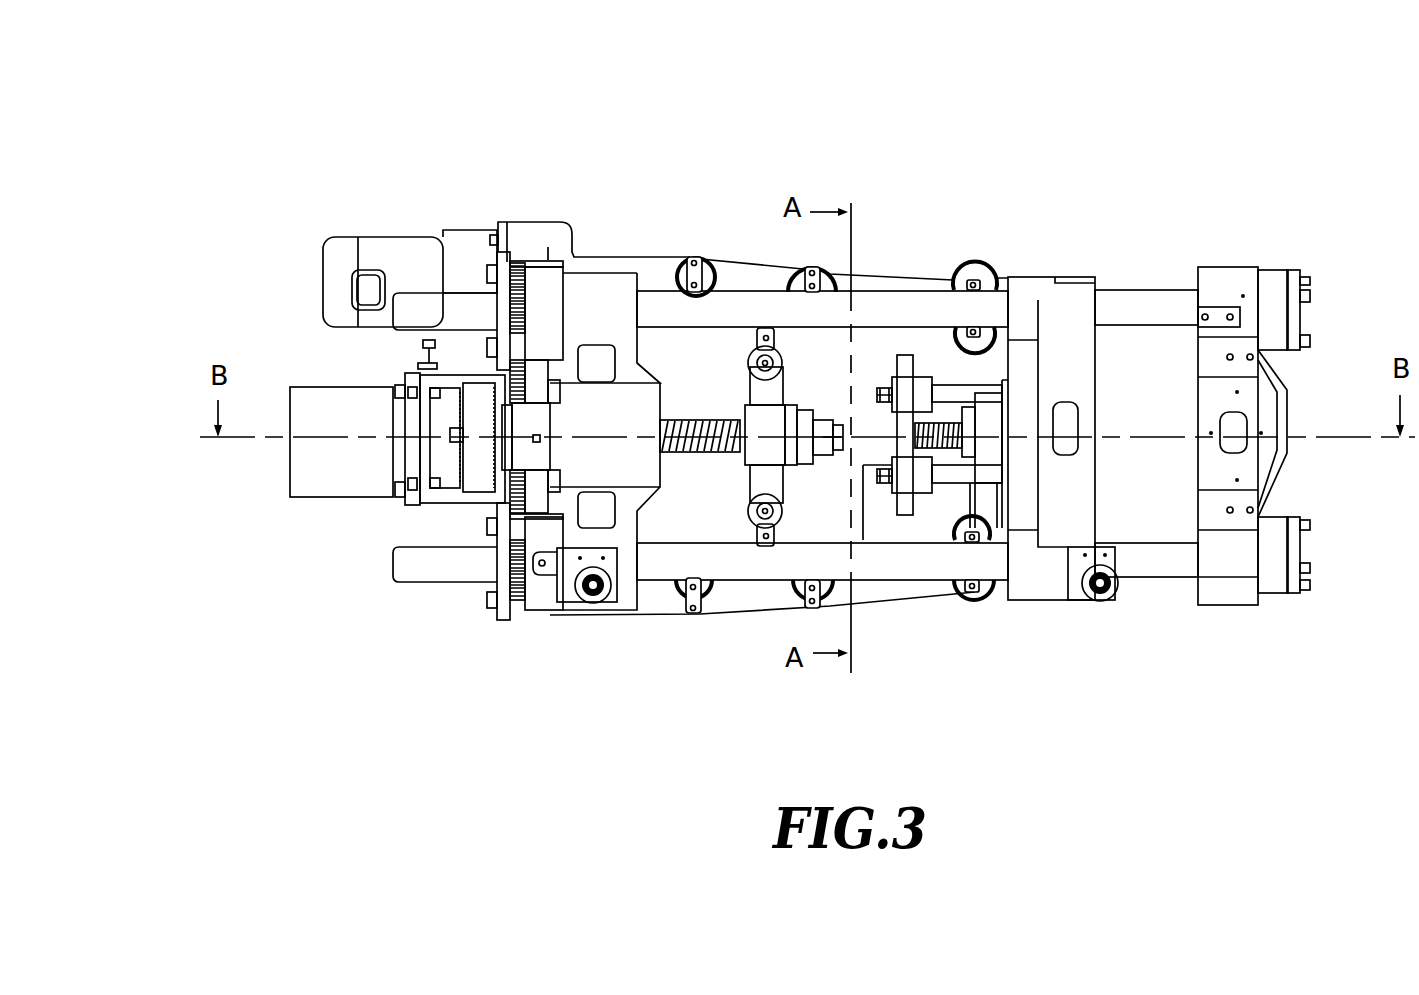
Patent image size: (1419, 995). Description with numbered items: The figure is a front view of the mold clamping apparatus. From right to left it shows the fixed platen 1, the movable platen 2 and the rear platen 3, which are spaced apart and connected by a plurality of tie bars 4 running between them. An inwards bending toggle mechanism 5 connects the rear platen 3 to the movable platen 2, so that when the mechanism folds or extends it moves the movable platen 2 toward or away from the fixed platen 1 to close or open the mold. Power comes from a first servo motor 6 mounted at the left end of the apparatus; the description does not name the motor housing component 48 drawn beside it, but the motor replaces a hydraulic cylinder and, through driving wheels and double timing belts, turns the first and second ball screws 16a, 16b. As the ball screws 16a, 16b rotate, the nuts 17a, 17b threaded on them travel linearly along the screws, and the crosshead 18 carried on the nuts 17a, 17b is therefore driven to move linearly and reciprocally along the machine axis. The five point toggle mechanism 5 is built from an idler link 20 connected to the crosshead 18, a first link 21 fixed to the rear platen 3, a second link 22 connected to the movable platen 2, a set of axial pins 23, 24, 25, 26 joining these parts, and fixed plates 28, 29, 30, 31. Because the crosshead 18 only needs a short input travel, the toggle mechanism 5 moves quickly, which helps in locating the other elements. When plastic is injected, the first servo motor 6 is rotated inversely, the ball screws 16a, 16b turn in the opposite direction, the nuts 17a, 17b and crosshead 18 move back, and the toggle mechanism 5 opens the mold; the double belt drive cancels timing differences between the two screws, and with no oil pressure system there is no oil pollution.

The fixed platen 1 is at (1218, 283).
The movable platen 2 is at (1020, 290).
The rear platen 3 is at (583, 320).
The tie bars 4 is at (1115, 310).
The inwards bending toggle mechanism 5 is at (711, 204).
The first servo motor 6 is at (342, 470).
The first ball screw 16a is at (668, 542).
The second ball screw 16b is at (822, 561).
The nut 17a is at (807, 407).
The nut 17b is at (975, 307).
The crosshead 18 is at (765, 397).
The idler link 20 is at (753, 350).
The first link 21 is at (757, 283).
The second link 22 is at (790, 392).
The axial pin 23 is at (675, 587).
The axial pin 24 is at (743, 540).
The axial pin 25 is at (845, 602).
The axial pin 26 is at (985, 590).
The fixed plate 28 is at (692, 598).
The fixed plate 29 is at (755, 540).
The fixed plate 30 is at (830, 600).
The fixed plate 31 is at (962, 598).
The motor 48 is at (413, 257).